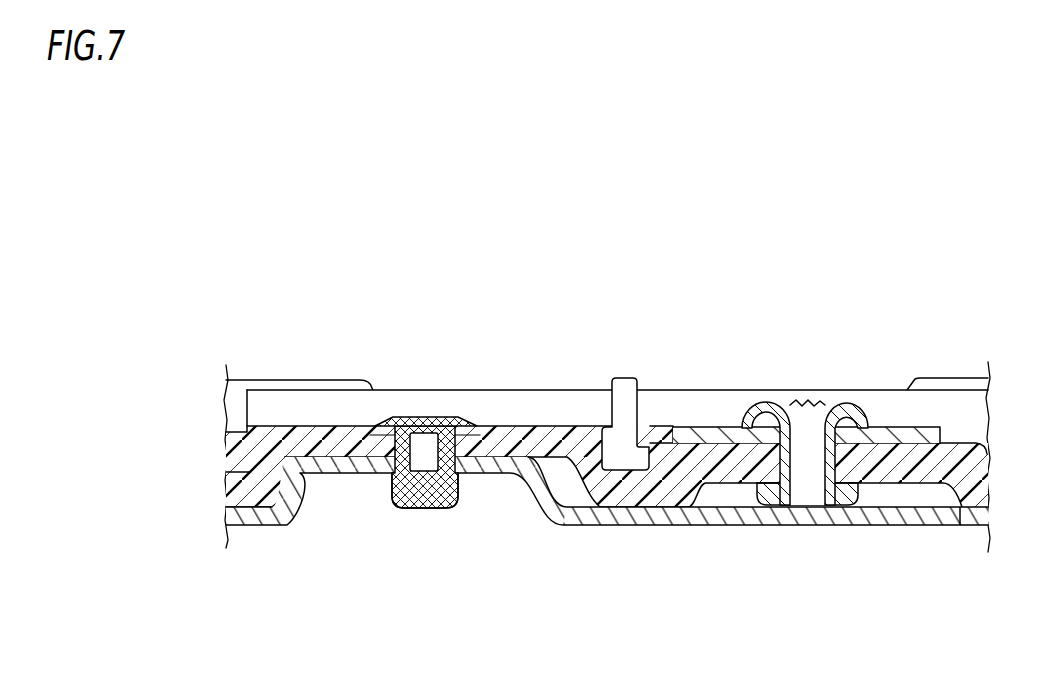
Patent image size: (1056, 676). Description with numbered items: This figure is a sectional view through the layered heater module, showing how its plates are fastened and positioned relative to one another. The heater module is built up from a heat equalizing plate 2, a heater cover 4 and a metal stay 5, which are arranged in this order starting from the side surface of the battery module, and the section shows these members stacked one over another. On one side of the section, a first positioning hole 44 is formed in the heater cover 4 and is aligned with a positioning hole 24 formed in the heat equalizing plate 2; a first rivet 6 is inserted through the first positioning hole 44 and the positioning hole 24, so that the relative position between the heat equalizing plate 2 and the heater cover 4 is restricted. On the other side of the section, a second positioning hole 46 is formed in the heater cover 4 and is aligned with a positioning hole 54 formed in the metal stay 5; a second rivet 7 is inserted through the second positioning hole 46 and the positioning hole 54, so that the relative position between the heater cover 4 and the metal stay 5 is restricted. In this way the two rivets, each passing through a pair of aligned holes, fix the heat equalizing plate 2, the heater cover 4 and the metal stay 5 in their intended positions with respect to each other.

The heat equalizing plate 2 is at (710, 390).
The heater cover 4 is at (910, 485).
The metal stay 5 is at (608, 528).
The first rivet 6 is at (817, 490).
The second rivet 7 is at (425, 455).
The positioning hole 24 is at (805, 455).
The first positioning hole 44 is at (785, 487).
The second positioning hole 46 is at (437, 417).
The positioning hole 54 is at (394, 510).